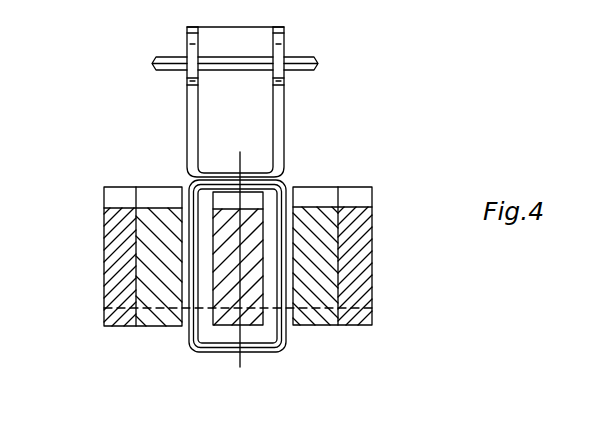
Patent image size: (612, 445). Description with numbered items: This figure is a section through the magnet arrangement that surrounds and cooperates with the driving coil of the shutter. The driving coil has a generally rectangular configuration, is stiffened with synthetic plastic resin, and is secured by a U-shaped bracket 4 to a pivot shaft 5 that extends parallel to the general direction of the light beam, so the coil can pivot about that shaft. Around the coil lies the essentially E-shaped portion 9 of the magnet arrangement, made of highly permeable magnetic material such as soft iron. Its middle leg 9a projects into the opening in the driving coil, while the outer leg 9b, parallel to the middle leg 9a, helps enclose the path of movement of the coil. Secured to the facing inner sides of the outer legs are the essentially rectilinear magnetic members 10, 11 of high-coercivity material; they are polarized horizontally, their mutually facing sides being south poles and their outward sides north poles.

The U-shaped bracket 4 is at (284, 43).
The pivot shaft 5 is at (305, 70).
The E-shaped portion of the magnet arrangement 9 is at (183, 198).
The middle leg 9a is at (248, 205).
The outer leg 9b is at (120, 234).
The magnetic member 10 is at (153, 261).
The magnetic member 11 is at (325, 268).